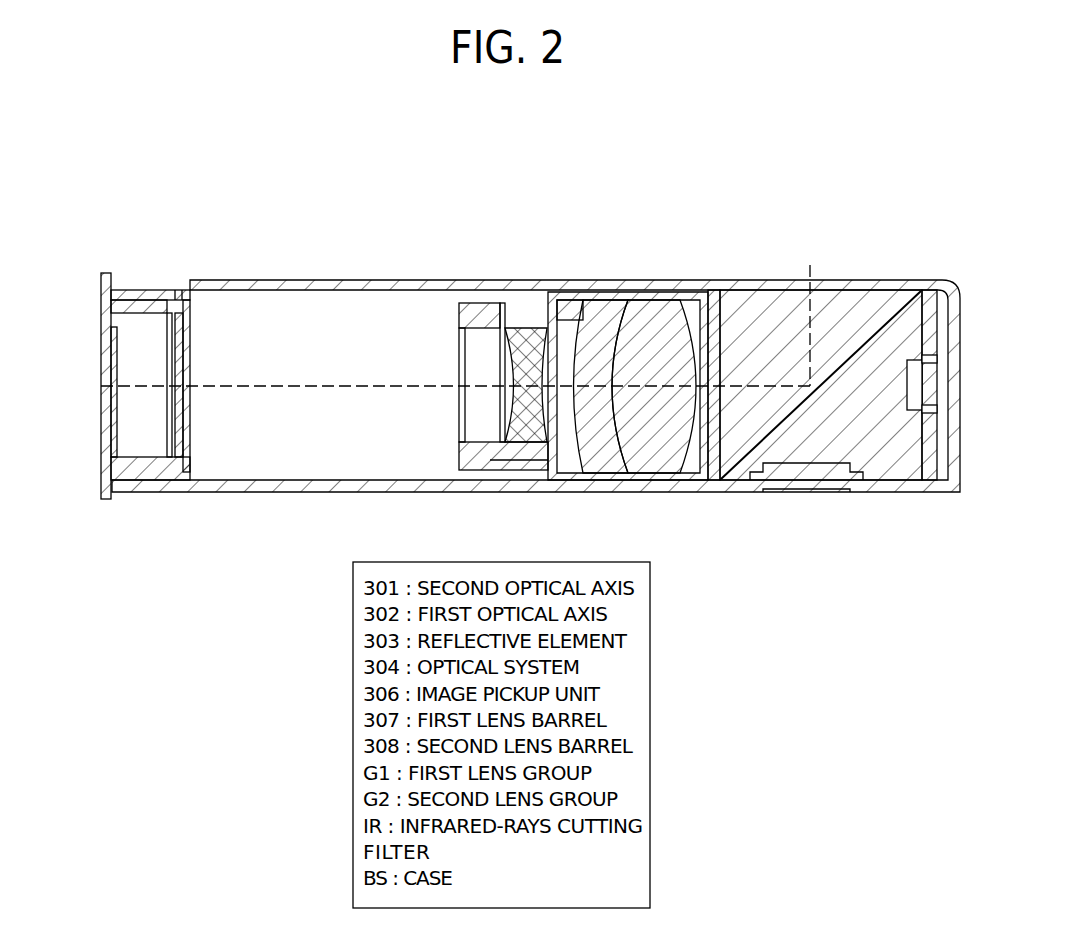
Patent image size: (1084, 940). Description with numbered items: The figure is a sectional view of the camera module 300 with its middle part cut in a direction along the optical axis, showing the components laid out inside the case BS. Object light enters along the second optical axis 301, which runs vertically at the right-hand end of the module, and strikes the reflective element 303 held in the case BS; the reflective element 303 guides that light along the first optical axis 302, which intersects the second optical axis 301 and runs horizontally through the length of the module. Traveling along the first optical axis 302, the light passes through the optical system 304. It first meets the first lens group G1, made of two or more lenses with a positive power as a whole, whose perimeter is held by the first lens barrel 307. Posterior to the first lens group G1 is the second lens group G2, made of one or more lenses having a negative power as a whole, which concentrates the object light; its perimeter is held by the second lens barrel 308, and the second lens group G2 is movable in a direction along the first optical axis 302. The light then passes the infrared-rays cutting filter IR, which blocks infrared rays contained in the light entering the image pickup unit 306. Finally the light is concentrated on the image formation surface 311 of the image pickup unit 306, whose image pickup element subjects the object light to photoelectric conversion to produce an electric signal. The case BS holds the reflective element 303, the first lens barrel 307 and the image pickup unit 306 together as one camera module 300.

The camera module 300 is at (127, 207).
The second optical axis 301 is at (810, 266).
The first optical axis 302 is at (324, 386).
The reflective element 303 is at (850, 312).
The optical system 304 is at (698, 228).
The image pickup unit 306 is at (104, 377).
The first lens barrel 307 is at (567, 472).
The second lens barrel 308 is at (470, 318).
The image formation surface 311 is at (120, 368).
The first lens group G1 is at (698, 272).
The second lens group G2 is at (553, 272).
The infrared-rays cutting filter IR is at (185, 341).
The case BS is at (940, 292).